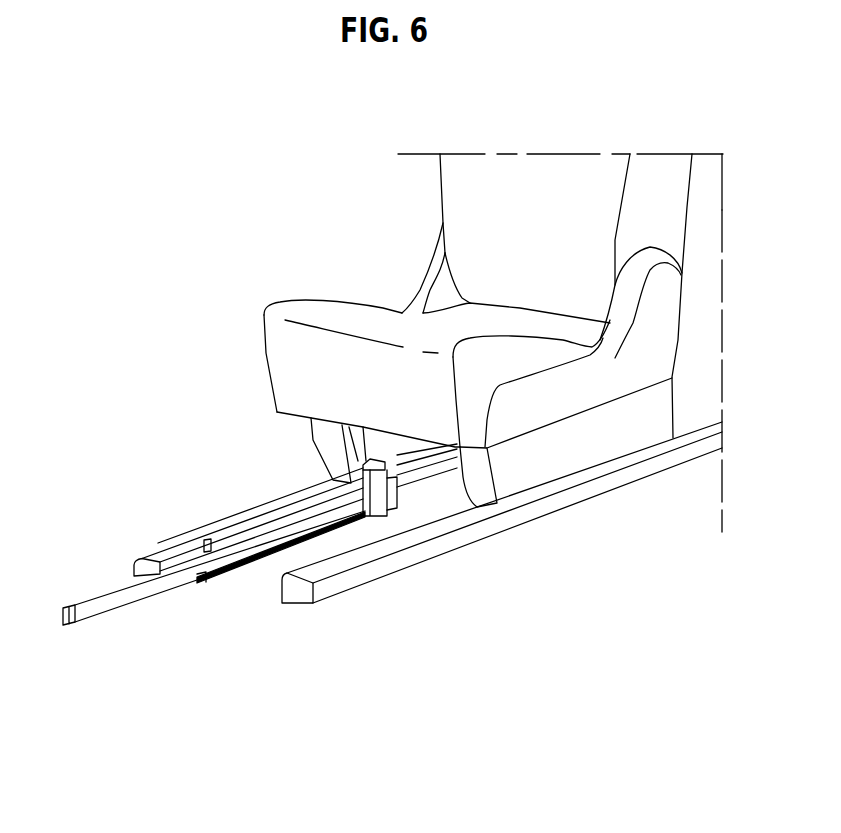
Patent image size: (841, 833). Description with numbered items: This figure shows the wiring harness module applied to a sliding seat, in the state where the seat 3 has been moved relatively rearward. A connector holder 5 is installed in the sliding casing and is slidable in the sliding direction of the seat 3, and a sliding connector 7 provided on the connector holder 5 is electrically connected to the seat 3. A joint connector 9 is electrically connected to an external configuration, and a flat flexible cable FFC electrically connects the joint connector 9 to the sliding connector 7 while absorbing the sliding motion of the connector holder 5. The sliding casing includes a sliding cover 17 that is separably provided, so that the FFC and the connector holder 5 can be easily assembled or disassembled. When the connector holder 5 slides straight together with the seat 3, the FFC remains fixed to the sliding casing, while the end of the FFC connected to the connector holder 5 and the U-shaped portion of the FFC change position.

The seat 3 is at (295, 373).
The connector holder 5 is at (352, 488).
The sliding connector 7 is at (362, 462).
The joint connector 9 is at (70, 630).
The flat flexible cable FFC is at (126, 598).
The sliding cover 17 is at (225, 579).